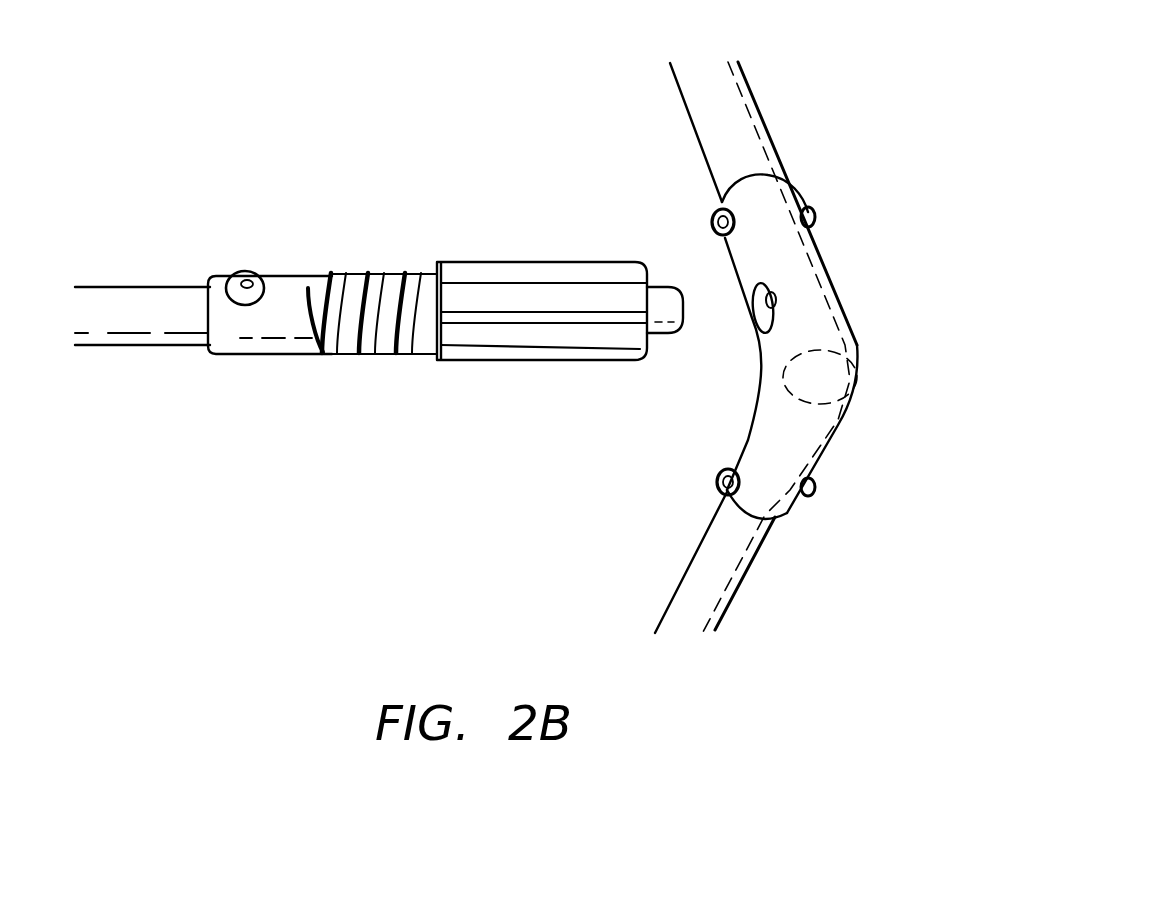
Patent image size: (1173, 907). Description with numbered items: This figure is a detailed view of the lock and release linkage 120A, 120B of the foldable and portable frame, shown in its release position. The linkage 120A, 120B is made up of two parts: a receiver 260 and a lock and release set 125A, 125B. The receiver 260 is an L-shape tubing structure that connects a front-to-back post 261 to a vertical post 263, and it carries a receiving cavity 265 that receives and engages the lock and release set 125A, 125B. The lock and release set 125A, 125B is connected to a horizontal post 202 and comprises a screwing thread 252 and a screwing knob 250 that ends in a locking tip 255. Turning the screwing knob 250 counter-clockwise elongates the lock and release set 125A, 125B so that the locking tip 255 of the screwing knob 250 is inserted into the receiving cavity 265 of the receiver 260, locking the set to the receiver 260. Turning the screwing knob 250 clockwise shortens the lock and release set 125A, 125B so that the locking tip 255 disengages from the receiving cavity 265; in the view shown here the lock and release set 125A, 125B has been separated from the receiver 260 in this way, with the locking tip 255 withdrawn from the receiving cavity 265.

The horizontal post 202 is at (160, 305).
The lock and release set 125A is at (668, 248).
The lock and release set 125B is at (456, 350).
The screwing thread 252 is at (383, 353).
The screwing knob 250 is at (528, 337).
The locking tip 255 is at (660, 333).
The lock and release linkage 120A is at (850, 76).
The lock and release linkage 120B is at (821, 344).
The front-to-back post 261 is at (737, 143).
The receiver 260 is at (828, 378).
The receiving cavity 265 is at (773, 287).
The vertical post 263 is at (747, 545).